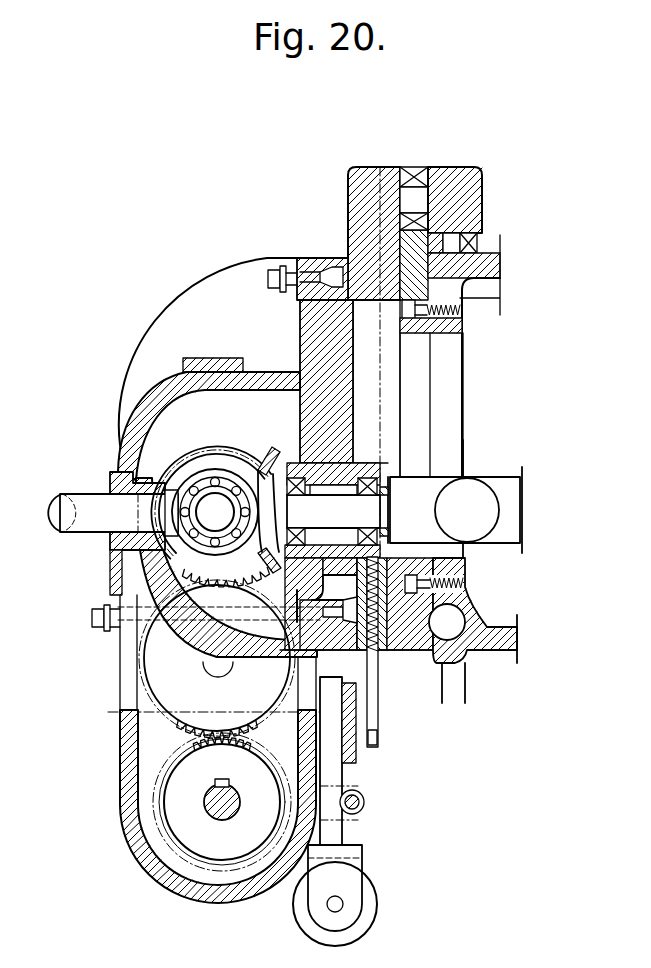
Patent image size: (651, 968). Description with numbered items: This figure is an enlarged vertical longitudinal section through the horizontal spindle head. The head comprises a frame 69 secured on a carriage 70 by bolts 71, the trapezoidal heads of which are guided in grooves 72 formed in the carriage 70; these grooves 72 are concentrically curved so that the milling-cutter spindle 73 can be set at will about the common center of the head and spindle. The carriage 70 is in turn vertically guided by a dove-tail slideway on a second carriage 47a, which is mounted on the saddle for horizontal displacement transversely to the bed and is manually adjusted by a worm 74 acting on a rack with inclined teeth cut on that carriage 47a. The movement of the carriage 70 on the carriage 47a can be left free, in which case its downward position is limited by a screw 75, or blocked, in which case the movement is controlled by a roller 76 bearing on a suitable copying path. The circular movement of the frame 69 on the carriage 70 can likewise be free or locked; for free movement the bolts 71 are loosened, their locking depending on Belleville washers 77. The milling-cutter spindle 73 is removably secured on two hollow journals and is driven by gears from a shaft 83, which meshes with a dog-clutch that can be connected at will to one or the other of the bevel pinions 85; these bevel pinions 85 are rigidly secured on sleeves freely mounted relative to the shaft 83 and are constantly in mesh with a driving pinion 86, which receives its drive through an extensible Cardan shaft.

The second carriage 47a is at (370, 178).
The frame 69 is at (177, 323).
The carriage 70 is at (318, 266).
The bolts 71 is at (279, 266).
The grooves 72 is at (364, 658).
The milling-cutter spindle 73 is at (224, 822).
The worm 74 is at (455, 630).
The screw 75 is at (381, 650).
The roller 76 is at (358, 925).
The Belleville washers 77 is at (291, 292).
The shaft 83 is at (222, 555).
The bevel pinions 85 is at (183, 455).
The driving pinion 86 is at (268, 452).